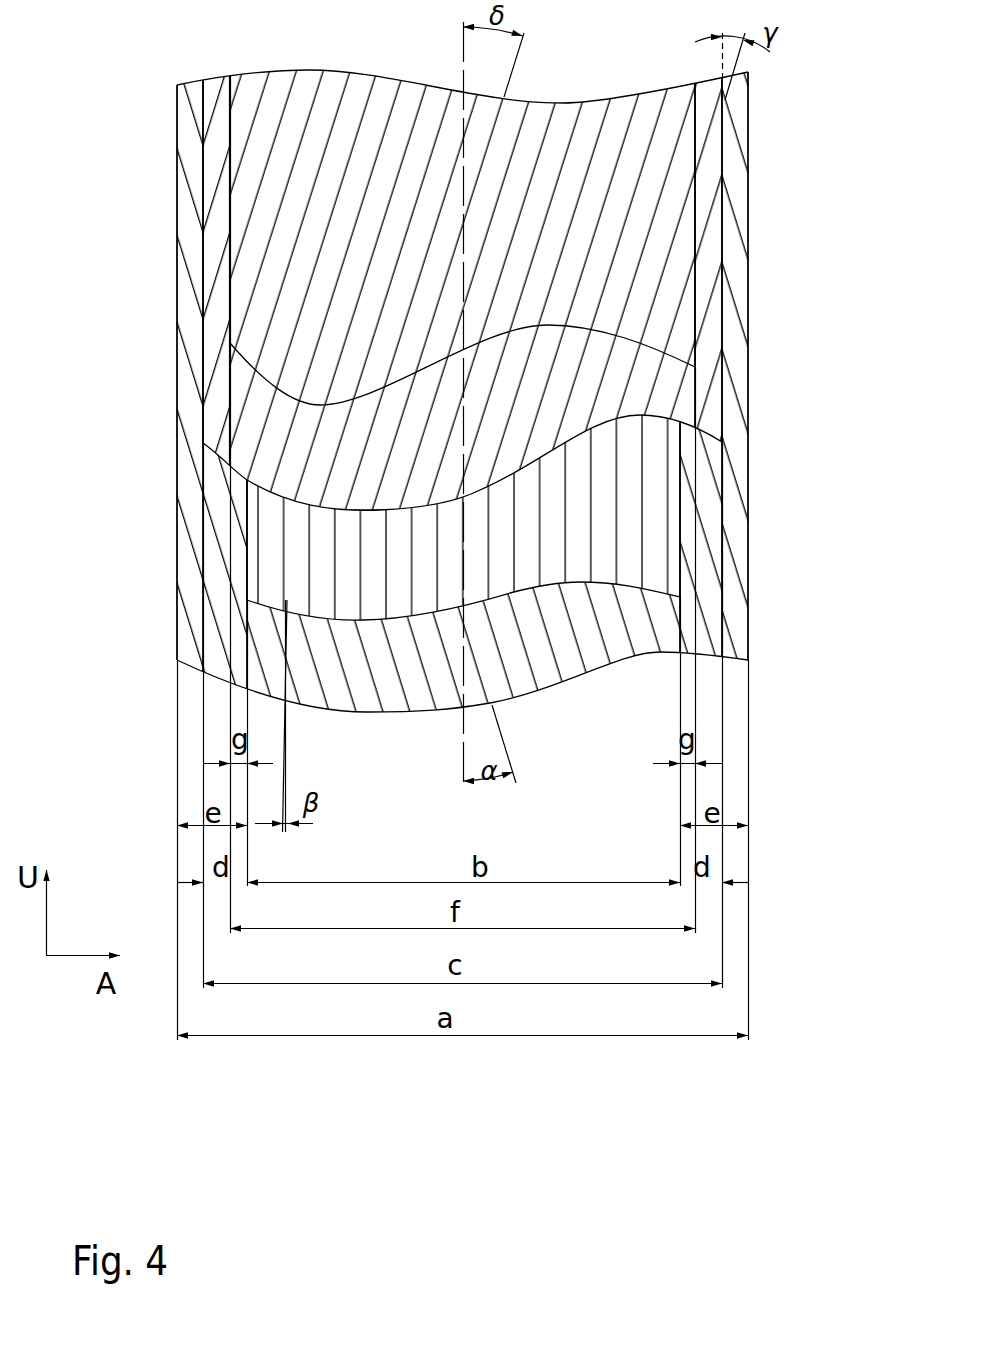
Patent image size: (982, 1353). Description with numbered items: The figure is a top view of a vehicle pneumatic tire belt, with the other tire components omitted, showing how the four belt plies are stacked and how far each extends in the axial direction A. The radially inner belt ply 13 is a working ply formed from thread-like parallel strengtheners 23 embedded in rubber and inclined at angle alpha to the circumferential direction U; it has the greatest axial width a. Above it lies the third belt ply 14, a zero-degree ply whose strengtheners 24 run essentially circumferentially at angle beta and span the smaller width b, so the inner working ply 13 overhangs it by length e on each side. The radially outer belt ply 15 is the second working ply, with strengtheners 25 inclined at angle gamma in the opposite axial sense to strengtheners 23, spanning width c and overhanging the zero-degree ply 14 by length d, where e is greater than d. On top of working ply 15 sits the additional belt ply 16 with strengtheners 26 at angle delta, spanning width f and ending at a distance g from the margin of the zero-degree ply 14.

The radially inner belt ply 13 is at (730, 342).
The third belt ply 14 is at (650, 540).
The radially outer belt ply 15 is at (700, 315).
The additional belt ply 16 is at (640, 203).
The strengtheners 23 is at (218, 591).
The strengtheners 24 is at (307, 557).
The strengtheners 25 is at (220, 300).
The strengtheners 26 is at (293, 170).